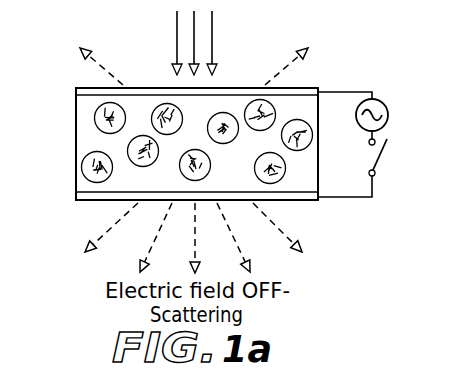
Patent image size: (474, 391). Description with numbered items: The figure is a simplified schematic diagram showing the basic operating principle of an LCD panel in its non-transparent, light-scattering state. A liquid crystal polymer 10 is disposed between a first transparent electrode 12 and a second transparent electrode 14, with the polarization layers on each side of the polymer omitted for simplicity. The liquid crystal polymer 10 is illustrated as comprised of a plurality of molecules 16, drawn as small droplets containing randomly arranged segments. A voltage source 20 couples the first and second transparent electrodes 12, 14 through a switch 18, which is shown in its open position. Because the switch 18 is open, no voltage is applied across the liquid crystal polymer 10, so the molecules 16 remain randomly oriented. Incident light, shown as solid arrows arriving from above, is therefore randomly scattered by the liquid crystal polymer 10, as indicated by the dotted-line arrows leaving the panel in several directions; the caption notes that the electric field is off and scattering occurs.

The liquid crystal polymer 10 is at (208, 138).
The first transparent electrode 12 is at (302, 87).
The second transparent electrode 14 is at (303, 196).
The molecules 16 is at (94, 118).
The switch 18 is at (388, 150).
The voltage source 20 is at (383, 105).